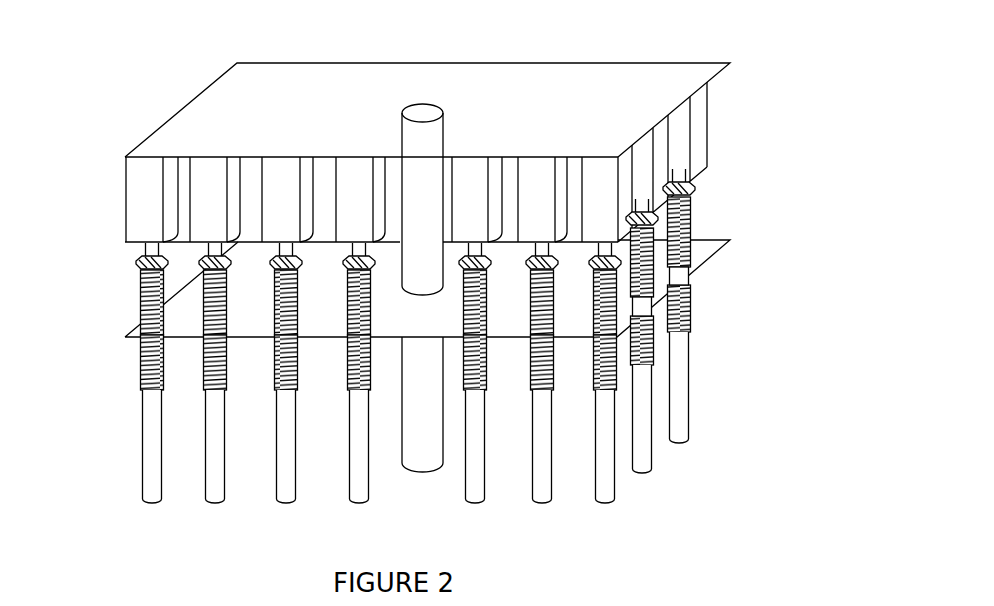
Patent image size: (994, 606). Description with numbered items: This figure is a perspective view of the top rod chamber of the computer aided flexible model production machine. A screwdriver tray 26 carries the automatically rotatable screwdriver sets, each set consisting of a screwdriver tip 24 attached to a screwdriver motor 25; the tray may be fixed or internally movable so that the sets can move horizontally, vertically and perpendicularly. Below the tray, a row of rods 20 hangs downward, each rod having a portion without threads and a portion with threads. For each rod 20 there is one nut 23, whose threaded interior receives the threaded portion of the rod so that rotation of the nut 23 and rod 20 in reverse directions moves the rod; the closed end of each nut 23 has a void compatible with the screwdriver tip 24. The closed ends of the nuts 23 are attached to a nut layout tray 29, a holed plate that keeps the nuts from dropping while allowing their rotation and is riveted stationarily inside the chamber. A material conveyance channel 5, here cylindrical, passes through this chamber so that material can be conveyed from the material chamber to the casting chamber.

The material conveyance channel 5 is at (422, 420).
The rods 20 is at (155, 417).
The nut 23 is at (140, 308).
The screwdriver tip 24 is at (140, 265).
The screwdriver motor 25 is at (148, 210).
The screwdriver tray 26 is at (643, 92).
The nut layout tray 29 is at (703, 250).